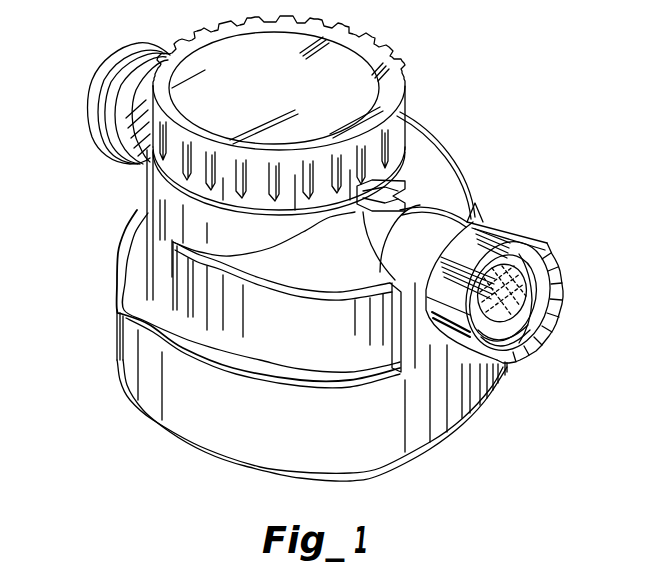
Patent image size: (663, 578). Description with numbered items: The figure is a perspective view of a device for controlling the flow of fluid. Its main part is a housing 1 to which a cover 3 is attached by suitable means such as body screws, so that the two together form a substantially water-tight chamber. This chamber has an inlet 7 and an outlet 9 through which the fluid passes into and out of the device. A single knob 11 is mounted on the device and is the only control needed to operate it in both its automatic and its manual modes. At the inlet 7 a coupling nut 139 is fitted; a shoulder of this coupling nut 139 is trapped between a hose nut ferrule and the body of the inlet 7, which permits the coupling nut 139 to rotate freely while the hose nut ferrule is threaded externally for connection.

The housing 1 is at (121, 309).
The cover 3 is at (157, 425).
The inlet 7 is at (540, 306).
The outlet 9 is at (98, 70).
The knob 11 is at (370, 53).
The coupling nut 139 is at (537, 232).